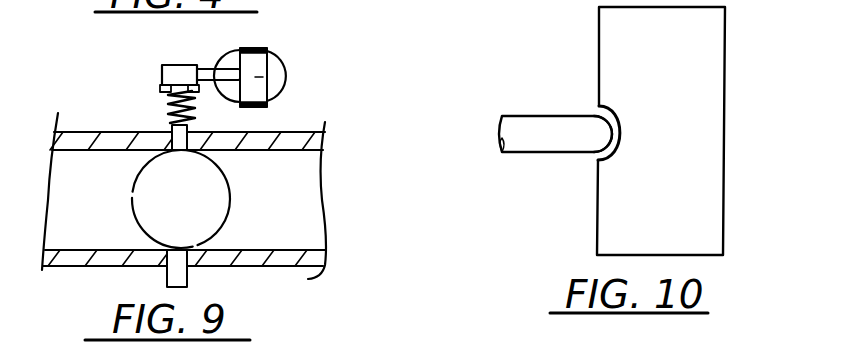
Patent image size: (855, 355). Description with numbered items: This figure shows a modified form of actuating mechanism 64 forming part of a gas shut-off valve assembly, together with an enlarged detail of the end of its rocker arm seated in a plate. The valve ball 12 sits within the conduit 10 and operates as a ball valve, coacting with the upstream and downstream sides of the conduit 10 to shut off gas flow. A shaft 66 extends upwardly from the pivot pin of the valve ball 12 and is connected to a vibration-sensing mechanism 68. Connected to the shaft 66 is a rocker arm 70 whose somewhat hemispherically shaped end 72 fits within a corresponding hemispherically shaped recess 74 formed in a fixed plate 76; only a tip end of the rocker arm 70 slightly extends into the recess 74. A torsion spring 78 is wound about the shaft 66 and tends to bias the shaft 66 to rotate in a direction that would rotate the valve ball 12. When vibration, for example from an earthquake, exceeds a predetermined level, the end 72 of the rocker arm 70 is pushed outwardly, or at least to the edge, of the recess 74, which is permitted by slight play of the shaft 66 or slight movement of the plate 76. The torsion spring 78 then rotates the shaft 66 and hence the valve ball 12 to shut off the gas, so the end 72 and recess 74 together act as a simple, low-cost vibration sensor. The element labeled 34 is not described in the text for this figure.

In FIG. 9, the conduit 10 is at (273, 132).
In FIG. 9, the valve ball 12 is at (133, 205).
In FIG. 9, the slot member 34 is at (272, 78).
In FIG. 9, the actuating mechanism 64 is at (212, 56).
In FIG. 9, the shaft 66 is at (162, 72).
In FIG. 9, the vibration-sensing mechanism 68 is at (220, 54).
In FIG. 9, the rocker arm 70 is at (208, 80).
In FIG. 10, the rocker arm 70 is at (562, 114).
In FIG. 10, the hemispherically shaped end 72 is at (600, 133).
In FIG. 10, the hemispherically shaped recess 74 is at (621, 120).
In FIG. 10, the fixed plate 76 is at (700, 130).
In FIG. 9, the torsion spring 78 is at (165, 118).